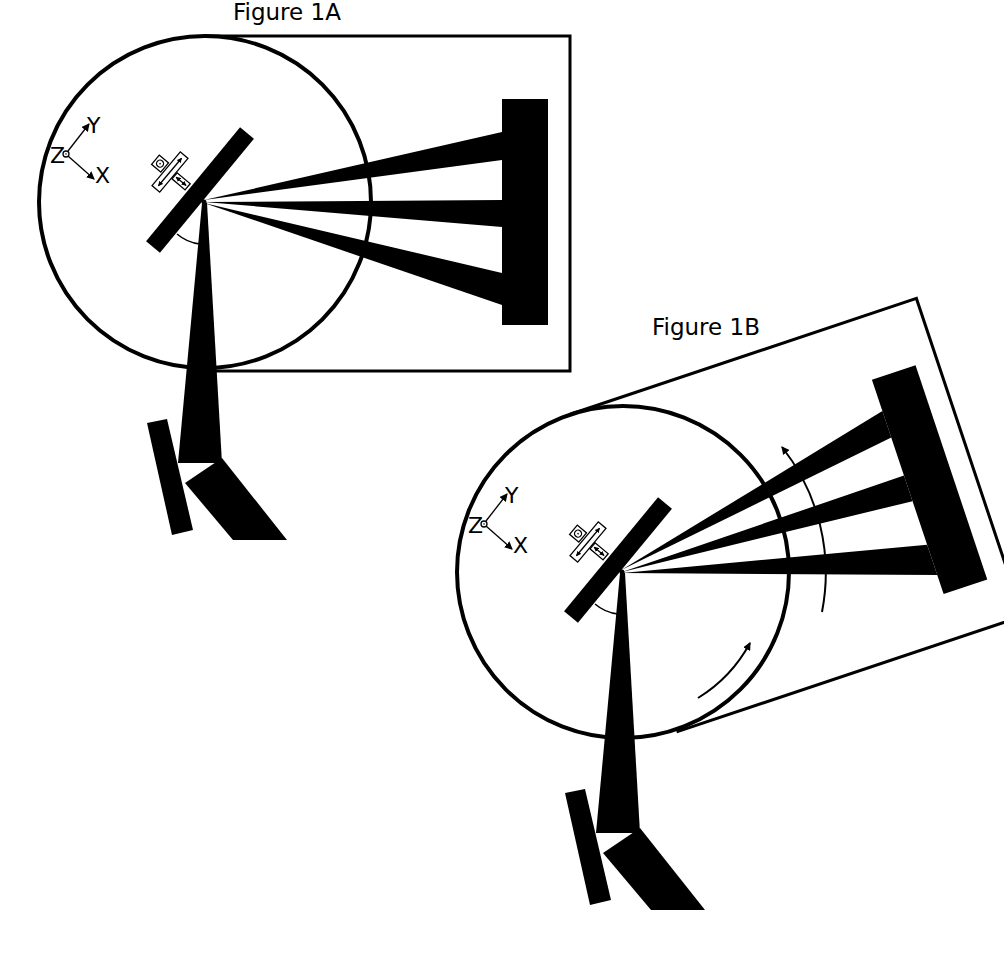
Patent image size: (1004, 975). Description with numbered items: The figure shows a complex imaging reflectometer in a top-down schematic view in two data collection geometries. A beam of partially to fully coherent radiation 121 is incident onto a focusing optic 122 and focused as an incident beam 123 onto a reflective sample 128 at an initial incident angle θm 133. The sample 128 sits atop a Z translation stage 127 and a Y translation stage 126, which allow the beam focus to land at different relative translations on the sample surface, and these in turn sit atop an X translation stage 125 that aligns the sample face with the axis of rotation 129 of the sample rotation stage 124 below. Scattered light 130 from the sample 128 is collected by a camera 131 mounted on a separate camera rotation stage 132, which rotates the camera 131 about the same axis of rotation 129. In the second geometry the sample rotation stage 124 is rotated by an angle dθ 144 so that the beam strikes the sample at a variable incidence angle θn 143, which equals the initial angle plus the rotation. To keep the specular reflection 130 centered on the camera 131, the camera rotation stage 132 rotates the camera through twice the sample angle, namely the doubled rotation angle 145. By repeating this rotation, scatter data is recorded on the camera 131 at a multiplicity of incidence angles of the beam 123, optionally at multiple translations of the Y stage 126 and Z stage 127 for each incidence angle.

In FIG. 1A, the beam of partially to fully coherent radiation 121 is at (249, 499).
In FIG. 1B, the beam of partially to fully coherent radiation 121 is at (668, 869).
In FIG. 1A, the focusing optic 122 is at (150, 477).
In FIG. 1B, the focusing optic 122 is at (568, 847).
In FIG. 1A, the incident beam 123 is at (223, 333).
In FIG. 1B, the incident beam 123 is at (643, 703).
In FIG. 1A, the sample rotation stage 124 is at (205, 202).
In FIG. 1B, the sample rotation stage 124 is at (623, 572).
In FIG. 1A, the X translation stage 125 is at (132, 231).
In FIG. 1B, the X translation stage 125 is at (550, 601).
In FIG. 1A, the Y translation stage 126 is at (122, 214).
In FIG. 1B, the Y translation stage 126 is at (540, 584).
In FIG. 1A, the Z translation stage 127 is at (108, 208).
In FIG. 1B, the Z translation stage 127 is at (526, 578).
In FIG. 1A, the reflective sample 128 is at (210, 168).
In FIG. 1B, the reflective sample 128 is at (628, 538).
In FIG. 1A, the axis of rotation 129 is at (210, 213).
In FIG. 1B, the axis of rotation 129 is at (652, 604).
In FIG. 1A, the scattered light 130 is at (353, 218).
In FIG. 1B, the scattered light 130 is at (768, 540).
In FIG. 1A, the camera 131 is at (525, 199).
In FIG. 1B, the camera 131 is at (928, 470).
In FIG. 1A, the camera rotation stage 132 is at (387, 203).
In FIG. 1B, the camera rotation stage 132 is at (787, 515).
In FIG. 1A, the initial incident angle θm 133 is at (168, 272).
In FIG. 1B, the incidence angle θn 143 is at (591, 639).
In FIG. 1B, the rotation angle dθ 144 is at (734, 658).
In FIG. 1B, the camera rotation angle 2 dθ 145 is at (788, 500).